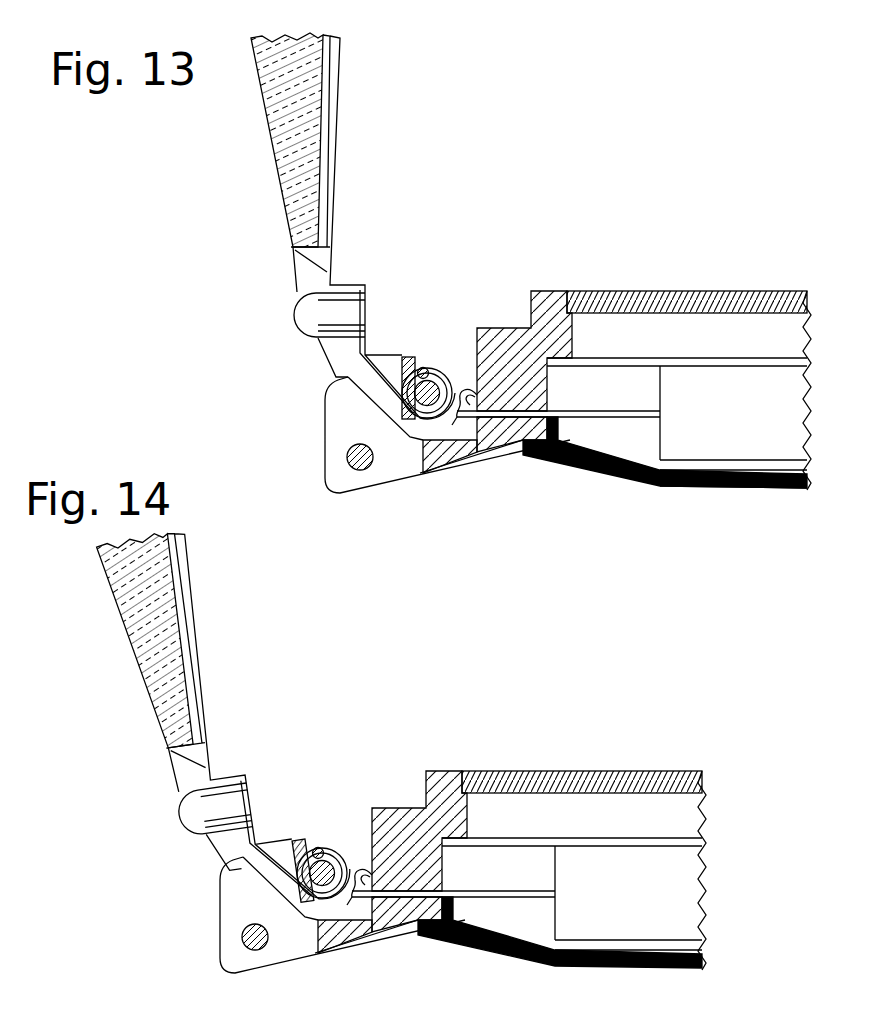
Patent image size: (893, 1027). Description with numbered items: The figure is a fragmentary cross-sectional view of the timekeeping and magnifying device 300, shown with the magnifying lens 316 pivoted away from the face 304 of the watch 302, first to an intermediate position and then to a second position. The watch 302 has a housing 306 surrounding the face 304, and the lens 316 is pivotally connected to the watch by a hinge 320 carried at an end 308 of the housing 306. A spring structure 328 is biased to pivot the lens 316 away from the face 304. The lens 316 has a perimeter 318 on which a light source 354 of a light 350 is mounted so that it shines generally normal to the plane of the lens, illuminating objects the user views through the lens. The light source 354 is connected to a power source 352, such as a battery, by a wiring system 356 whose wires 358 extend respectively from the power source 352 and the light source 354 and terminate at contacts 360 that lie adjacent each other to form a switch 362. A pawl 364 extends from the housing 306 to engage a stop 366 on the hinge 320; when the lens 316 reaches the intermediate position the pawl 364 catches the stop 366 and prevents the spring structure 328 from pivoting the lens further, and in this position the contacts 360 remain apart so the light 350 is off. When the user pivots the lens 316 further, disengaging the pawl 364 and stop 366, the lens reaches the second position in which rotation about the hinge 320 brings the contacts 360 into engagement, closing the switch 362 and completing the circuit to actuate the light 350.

In FIG. 13, the timekeeping and magnifying device 300 is at (605, 168).
In FIG. 14, the timekeeping and magnifying device 300 is at (585, 668).
In FIG. 13, the watch 302 is at (655, 440).
In FIG. 14, the watch 302 is at (552, 920).
In FIG. 13, the face 304 is at (665, 292).
In FIG. 14, the face 304 is at (540, 773).
In FIG. 13, the housing 306 is at (578, 462).
In FIG. 14, the housing 306 is at (470, 950).
In FIG. 13, the end 308 is at (325, 440).
In FIG. 14, the end 308 is at (220, 927).
In FIG. 13, the magnifying lens 316 is at (276, 158).
In FIG. 14, the magnifying lens 316 is at (135, 655).
In FIG. 13, the perimeter 318 is at (295, 267).
In FIG. 14, the perimeter 318 is at (170, 767).
In FIG. 13, the hinge 320 is at (418, 350).
In FIG. 14, the hinge 320 is at (320, 832).
In FIG. 13, the spring structure 328 is at (405, 358).
In FIG. 14, the spring structure 328 is at (295, 840).
In FIG. 13, the light 350 is at (297, 350).
In FIG. 13, the power source 352 is at (775, 486).
In FIG. 13, the light source 354 is at (296, 302).
In FIG. 14, the light source 354 is at (180, 817).
In FIG. 13, the wiring system 356 is at (622, 422).
In FIG. 14, the wiring system 356 is at (453, 894).
In FIG. 13, the wires 358 is at (413, 425).
In FIG. 14, the wires 358 is at (407, 914).
In FIG. 13, the contacts 360 is at (440, 442).
In FIG. 14, the contacts 360 is at (343, 922).
In FIG. 13, the switch 362 is at (458, 434).
In FIG. 14, the switch 362 is at (355, 923).
In FIG. 13, the pawl 364 is at (462, 396).
In FIG. 14, the pawl 364 is at (372, 884).
In FIG. 13, the stop 366 is at (470, 398).
In FIG. 14, the stop 366 is at (364, 850).